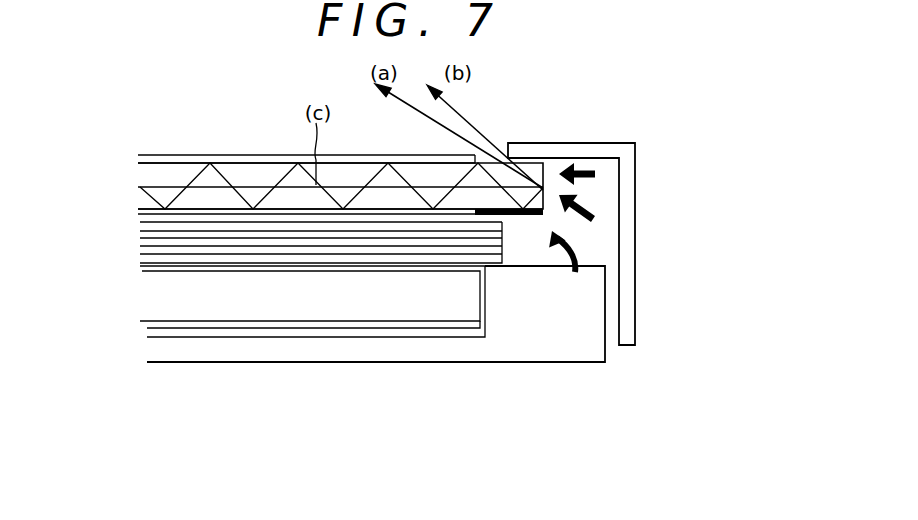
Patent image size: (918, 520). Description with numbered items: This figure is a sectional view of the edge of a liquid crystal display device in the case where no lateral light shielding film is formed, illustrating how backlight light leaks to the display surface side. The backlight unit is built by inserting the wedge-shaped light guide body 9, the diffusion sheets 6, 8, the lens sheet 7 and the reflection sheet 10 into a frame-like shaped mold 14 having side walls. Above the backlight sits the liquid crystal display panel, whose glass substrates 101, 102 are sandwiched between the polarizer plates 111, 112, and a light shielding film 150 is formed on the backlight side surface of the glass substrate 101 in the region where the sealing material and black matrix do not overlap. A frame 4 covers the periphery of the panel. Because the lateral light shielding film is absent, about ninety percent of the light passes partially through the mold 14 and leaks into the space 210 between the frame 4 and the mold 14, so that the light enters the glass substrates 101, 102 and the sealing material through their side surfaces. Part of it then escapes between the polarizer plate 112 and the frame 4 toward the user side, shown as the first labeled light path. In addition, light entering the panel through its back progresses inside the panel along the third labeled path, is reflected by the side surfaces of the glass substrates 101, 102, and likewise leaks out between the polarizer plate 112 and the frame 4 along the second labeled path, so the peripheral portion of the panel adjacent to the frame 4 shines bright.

The frame 4 is at (628, 183).
The diffusion sheet 6 is at (142, 228).
The lens sheet 7 is at (140, 237).
The diffusion sheet 8 is at (142, 258).
The wedge-shaped light guide body 9 is at (153, 297).
The reflection sheet 10 is at (150, 328).
The mold 14 is at (535, 354).
The glass substrate 101 is at (148, 202).
The glass substrate 102 is at (147, 177).
The polarizer plate 111 is at (140, 212).
The polarizer plate 112 is at (185, 154).
The light shielding film 150 is at (525, 216).
The space 210 is at (583, 166).